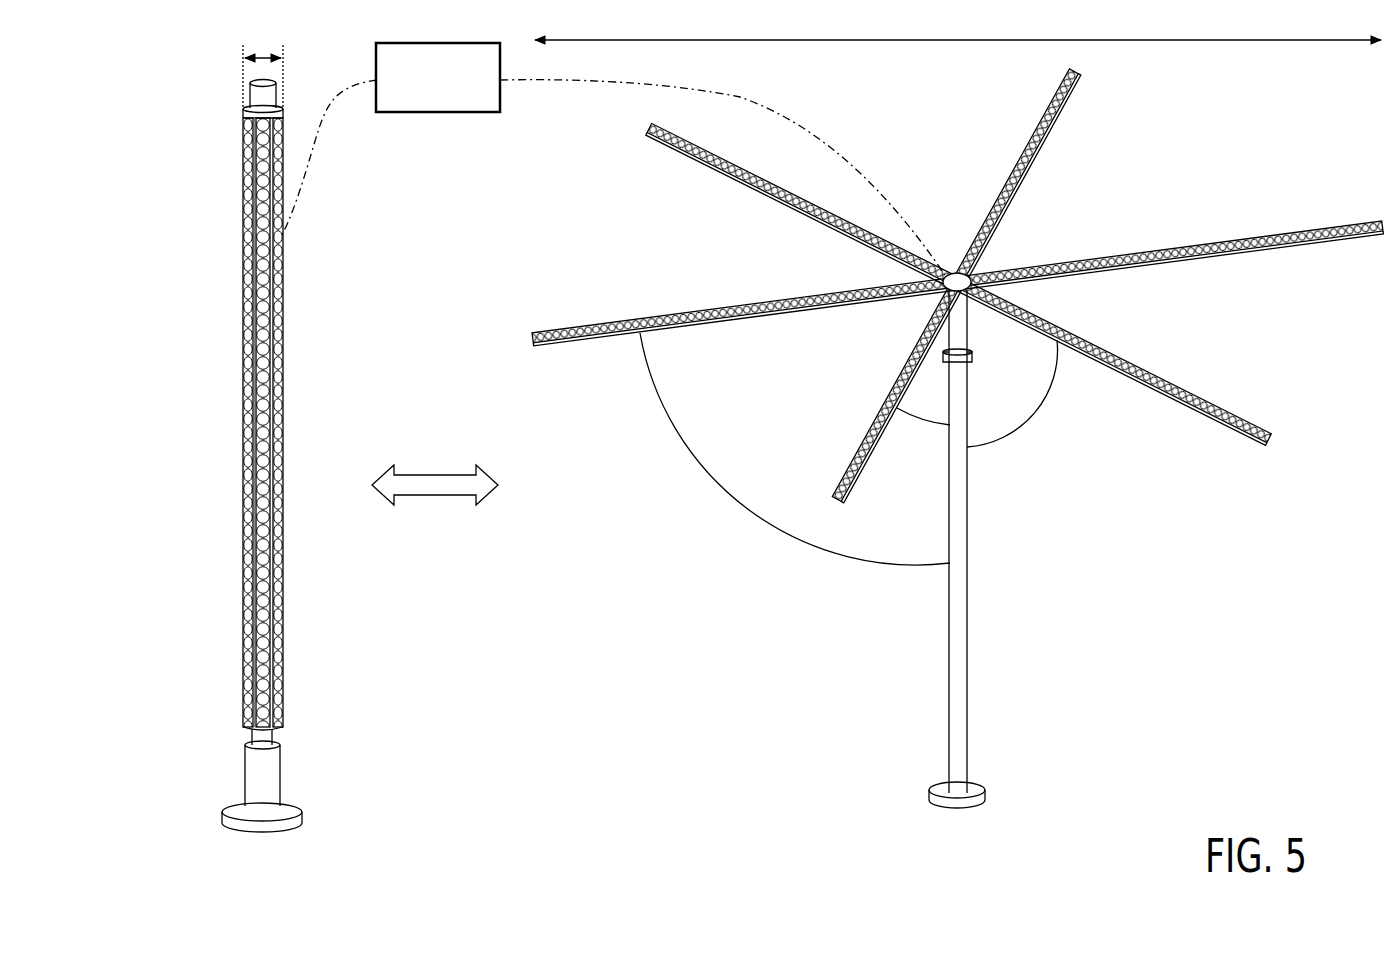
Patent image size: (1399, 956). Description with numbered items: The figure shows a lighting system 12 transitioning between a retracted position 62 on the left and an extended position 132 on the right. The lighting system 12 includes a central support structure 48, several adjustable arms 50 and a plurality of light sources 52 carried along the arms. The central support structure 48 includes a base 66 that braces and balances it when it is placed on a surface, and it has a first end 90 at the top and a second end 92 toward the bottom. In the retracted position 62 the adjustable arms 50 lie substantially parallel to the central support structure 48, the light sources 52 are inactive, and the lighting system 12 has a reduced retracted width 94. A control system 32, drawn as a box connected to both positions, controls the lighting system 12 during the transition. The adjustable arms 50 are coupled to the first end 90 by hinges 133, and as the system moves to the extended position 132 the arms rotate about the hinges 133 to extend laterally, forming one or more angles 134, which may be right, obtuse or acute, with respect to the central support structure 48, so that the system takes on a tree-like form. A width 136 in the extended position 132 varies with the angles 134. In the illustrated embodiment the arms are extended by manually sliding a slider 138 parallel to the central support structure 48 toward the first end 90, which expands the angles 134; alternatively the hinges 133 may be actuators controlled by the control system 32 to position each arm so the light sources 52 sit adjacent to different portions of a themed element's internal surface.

The lighting system 12 is at (70, 97).
The control system 32 is at (437, 112).
The central support structure 48 is at (249, 93).
The adjustable arms 50 is at (273, 200).
The light sources 52 is at (246, 360).
The retracted position 62 is at (273, 836).
The base 66 is at (197, 807).
The first end 90 is at (162, 162).
The second end 92 is at (210, 685).
The retracted width 94 is at (257, 56).
The extended position 132 is at (969, 822).
The hinges 133 is at (964, 298).
The angles 134 is at (998, 440).
The width 136 is at (958, 40).
The slider 138 is at (974, 360).